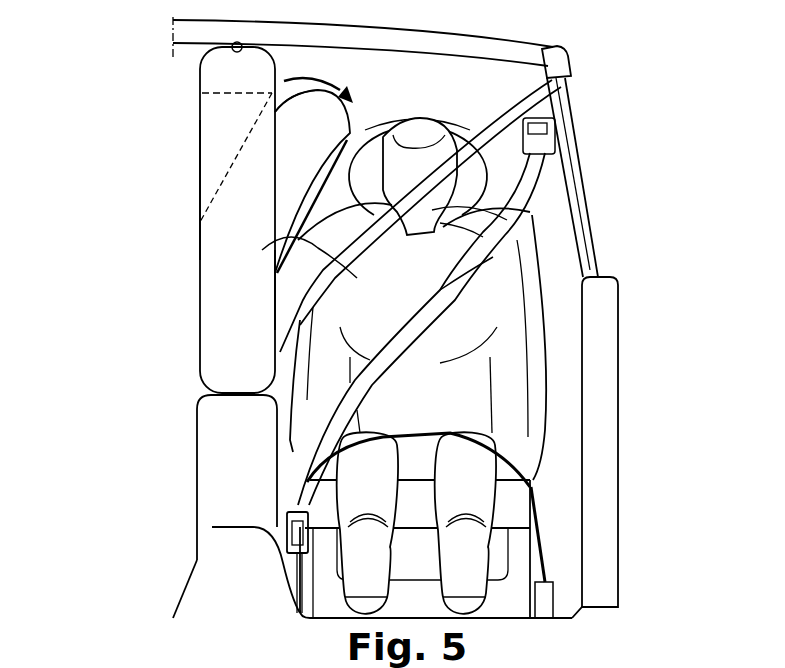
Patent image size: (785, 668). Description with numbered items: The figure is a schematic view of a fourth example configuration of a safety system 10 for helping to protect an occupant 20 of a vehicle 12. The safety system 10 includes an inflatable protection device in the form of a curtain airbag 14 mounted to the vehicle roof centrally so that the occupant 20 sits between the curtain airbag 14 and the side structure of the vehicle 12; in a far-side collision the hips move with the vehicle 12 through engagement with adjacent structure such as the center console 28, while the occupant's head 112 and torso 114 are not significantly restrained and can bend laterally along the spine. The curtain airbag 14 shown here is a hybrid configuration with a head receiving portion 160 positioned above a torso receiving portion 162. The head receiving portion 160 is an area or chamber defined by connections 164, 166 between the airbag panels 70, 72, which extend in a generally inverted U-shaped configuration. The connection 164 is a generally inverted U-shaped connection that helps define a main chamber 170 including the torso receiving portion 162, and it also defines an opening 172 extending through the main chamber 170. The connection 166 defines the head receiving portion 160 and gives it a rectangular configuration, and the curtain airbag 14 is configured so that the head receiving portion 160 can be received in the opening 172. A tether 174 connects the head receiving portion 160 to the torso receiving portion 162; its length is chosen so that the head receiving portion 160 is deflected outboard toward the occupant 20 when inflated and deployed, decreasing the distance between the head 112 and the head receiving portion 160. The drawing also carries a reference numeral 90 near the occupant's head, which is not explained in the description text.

The safety system 10 is at (126, 56).
The vehicle 12 is at (584, 72).
The curtain airbag 14 is at (223, 307).
The occupant 20 is at (503, 275).
The center console 28 is at (225, 448).
The airbag panel 70 is at (272, 240).
The airbag panel 72 is at (200, 233).
The occupant 90 is at (440, 165).
The head 112 is at (413, 132).
The torso 114 is at (472, 308).
The head receiving portion 160 is at (310, 138).
The torso receiving portion 162 is at (233, 337).
The connection 164 is at (233, 95).
The connection 166 is at (320, 90).
The main chamber 170 is at (220, 292).
The opening 172 is at (176, 167).
The tether 174 is at (343, 265).